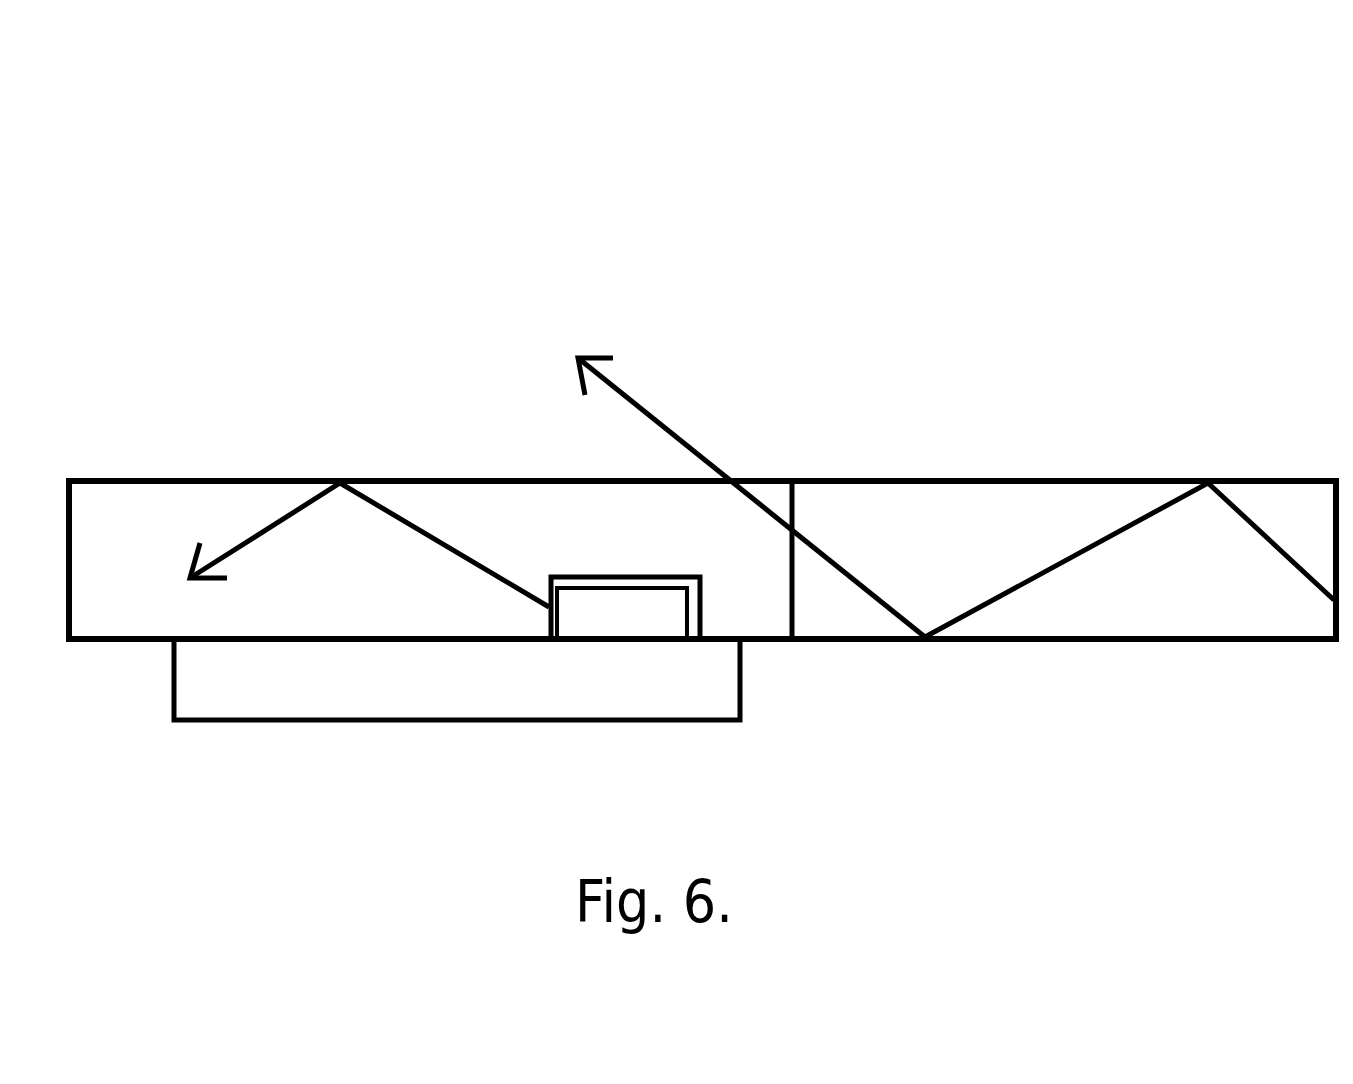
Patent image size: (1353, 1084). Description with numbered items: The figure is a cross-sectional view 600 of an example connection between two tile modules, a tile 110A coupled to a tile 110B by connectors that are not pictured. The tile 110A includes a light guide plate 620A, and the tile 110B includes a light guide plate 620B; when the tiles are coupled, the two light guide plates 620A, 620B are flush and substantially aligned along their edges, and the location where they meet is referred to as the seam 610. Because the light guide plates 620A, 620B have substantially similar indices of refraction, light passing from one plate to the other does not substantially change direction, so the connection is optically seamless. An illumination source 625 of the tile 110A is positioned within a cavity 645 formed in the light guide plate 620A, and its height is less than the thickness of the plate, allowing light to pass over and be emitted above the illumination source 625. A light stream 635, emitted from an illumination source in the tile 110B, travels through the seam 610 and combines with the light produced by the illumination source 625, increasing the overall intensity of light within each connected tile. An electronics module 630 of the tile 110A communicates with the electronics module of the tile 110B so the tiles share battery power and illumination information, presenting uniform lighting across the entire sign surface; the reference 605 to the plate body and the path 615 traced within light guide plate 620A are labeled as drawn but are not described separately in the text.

The cross-sectional view 600 is at (649, 83).
The waveguide 605 is at (1088, 478).
The seam 610 is at (782, 602).
The light path in first waveguide portion 615 is at (433, 510).
The light guide plate 620A is at (313, 592).
The light guide plate 620B is at (1164, 601).
The illumination source 625 is at (635, 613).
The electronics module 630 is at (495, 697).
The light stream 635 is at (698, 418).
The cavity 645 is at (702, 597).
The tile 110A is at (166, 383).
The tile 110B is at (1214, 422).